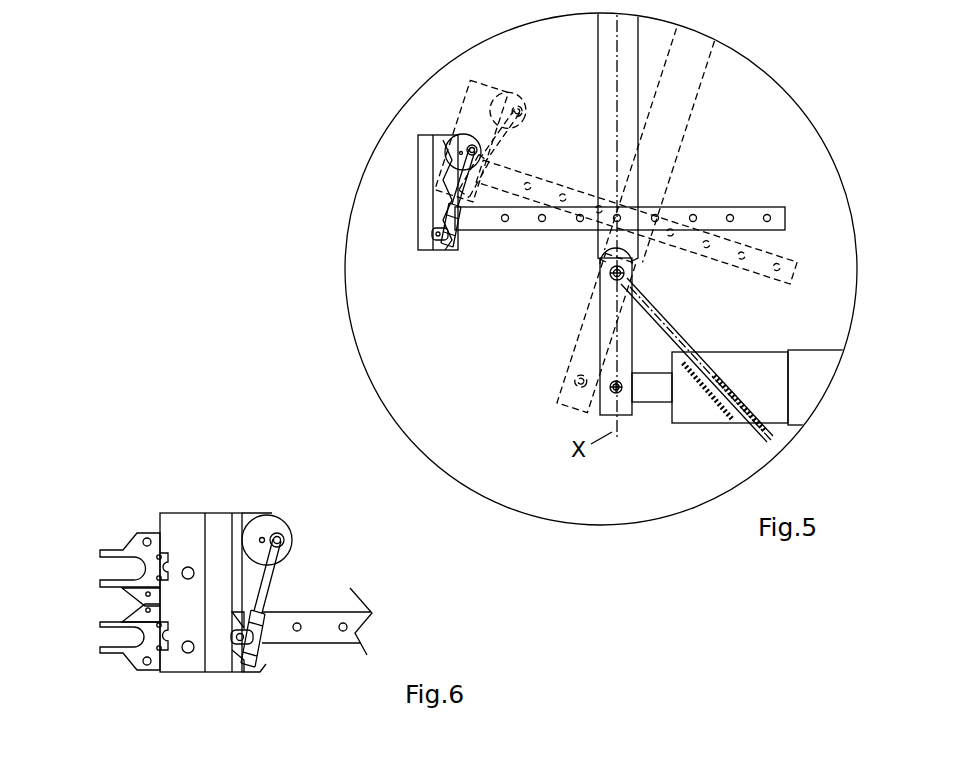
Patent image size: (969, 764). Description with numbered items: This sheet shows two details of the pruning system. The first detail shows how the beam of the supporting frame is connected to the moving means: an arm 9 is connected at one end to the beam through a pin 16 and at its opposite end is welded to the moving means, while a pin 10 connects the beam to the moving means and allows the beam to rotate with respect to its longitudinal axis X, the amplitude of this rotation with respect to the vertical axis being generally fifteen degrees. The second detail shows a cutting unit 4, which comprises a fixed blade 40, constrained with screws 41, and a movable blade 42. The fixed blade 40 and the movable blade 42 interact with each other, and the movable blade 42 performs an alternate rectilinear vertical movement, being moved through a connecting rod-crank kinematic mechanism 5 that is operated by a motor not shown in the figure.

In FIG. 6, the cutting unit 4 is at (186, 488).
In FIG. 6, the connecting rod-crank kinematic mechanism 5 is at (279, 508).
In FIG. 5, the arm 9 is at (688, 330).
In FIG. 5, the pin 10 is at (620, 394).
In FIG. 5, the pin 16 is at (628, 273).
In FIG. 6, the fixed blade 40 is at (110, 550).
In FIG. 6, the screws 41 is at (163, 578).
In FIG. 6, the movable blade 42 is at (118, 590).